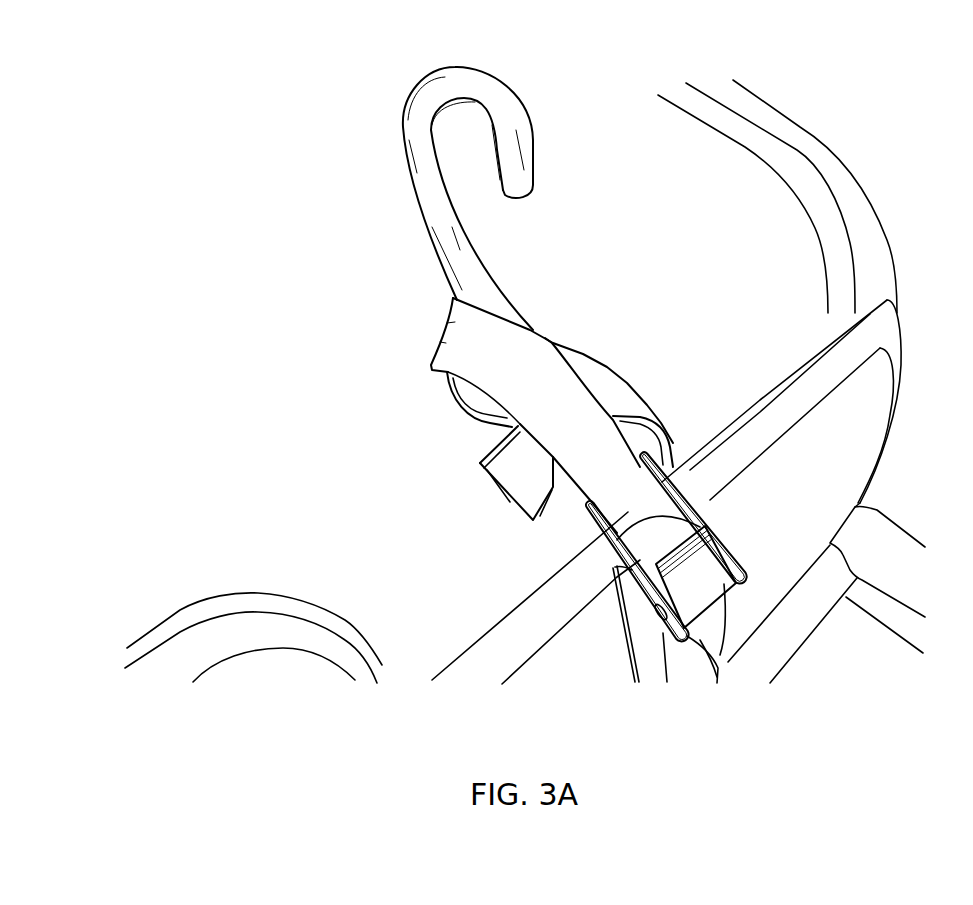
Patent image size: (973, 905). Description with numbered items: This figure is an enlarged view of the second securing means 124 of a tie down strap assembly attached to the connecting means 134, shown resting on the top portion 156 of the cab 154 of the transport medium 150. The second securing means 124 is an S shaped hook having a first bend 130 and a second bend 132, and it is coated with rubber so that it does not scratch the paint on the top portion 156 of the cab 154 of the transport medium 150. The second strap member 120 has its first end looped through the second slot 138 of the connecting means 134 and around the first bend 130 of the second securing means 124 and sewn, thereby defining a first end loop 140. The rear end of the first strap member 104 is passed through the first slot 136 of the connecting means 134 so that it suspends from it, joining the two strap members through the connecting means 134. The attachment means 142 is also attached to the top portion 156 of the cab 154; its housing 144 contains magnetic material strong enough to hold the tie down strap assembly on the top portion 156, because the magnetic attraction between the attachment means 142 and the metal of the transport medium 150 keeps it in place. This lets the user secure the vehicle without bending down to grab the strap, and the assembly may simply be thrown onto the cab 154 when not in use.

The first strap member 104 is at (697, 656).
The second strap member 120 is at (585, 353).
The second securing means 124 is at (484, 70).
The first bend 130 is at (458, 412).
The second bend 132 is at (417, 72).
The connecting means 134 is at (716, 508).
The first slot 136 is at (727, 583).
The second slot 138 is at (614, 568).
The first end loop 140 is at (442, 375).
The attachment means 142 is at (490, 445).
The housing 144 is at (480, 464).
The transport medium 150 is at (800, 176).
The cab 154 is at (850, 168).
The top portion 156 is at (743, 175).